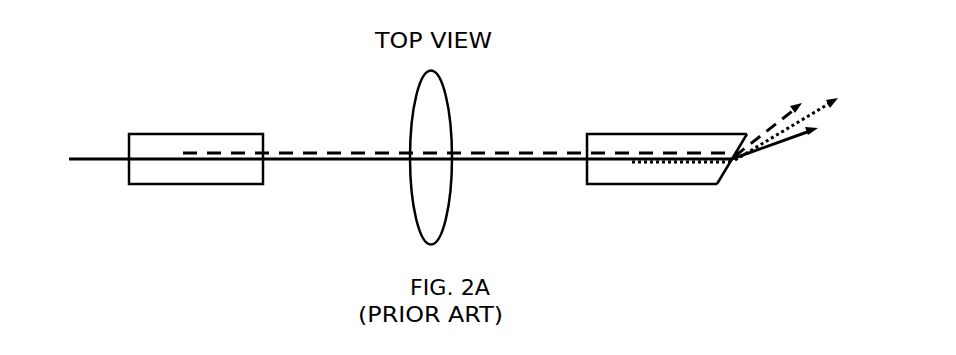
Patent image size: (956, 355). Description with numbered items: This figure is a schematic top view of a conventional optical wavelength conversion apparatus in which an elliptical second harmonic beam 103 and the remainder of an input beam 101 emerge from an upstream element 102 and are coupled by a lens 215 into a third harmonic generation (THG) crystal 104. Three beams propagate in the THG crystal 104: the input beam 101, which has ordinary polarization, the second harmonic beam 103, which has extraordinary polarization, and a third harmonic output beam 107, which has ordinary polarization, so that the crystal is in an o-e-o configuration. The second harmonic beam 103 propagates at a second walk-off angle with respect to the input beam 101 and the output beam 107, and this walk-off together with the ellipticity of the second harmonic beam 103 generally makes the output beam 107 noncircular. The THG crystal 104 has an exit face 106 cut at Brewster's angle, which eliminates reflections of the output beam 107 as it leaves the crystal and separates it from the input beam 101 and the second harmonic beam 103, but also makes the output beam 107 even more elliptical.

The input beam 101 is at (83, 158).
The first waveguide block 102 is at (172, 142).
The second harmonic beam 103 is at (293, 153).
The third harmonic generation (THG) crystal 104 is at (630, 143).
The exit face 106 is at (722, 176).
The third harmonic output beam 107 is at (822, 111).
The lens 215 is at (452, 200).